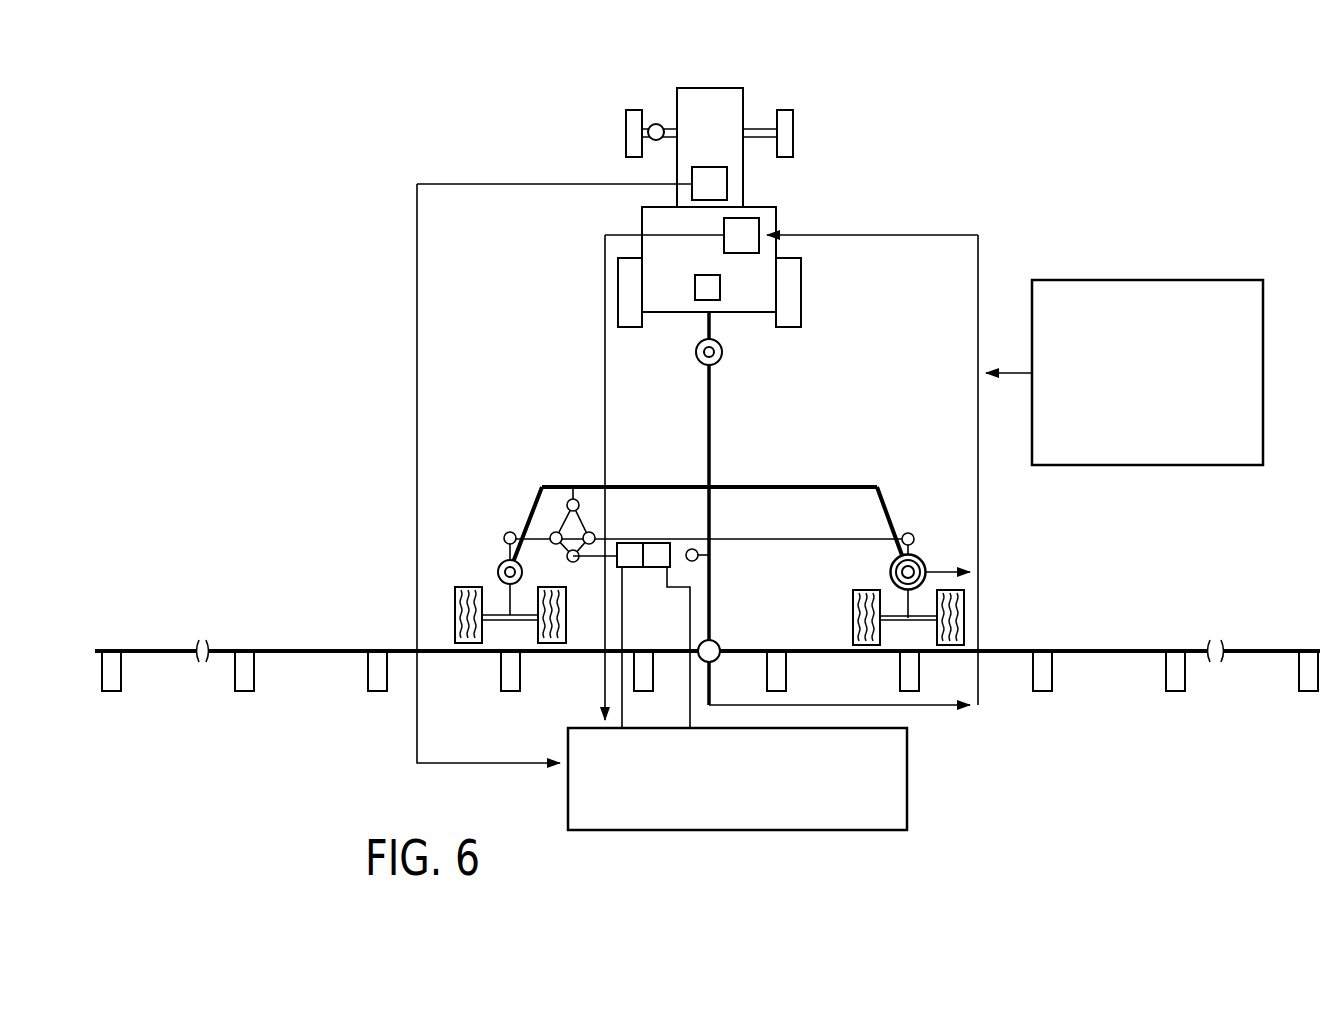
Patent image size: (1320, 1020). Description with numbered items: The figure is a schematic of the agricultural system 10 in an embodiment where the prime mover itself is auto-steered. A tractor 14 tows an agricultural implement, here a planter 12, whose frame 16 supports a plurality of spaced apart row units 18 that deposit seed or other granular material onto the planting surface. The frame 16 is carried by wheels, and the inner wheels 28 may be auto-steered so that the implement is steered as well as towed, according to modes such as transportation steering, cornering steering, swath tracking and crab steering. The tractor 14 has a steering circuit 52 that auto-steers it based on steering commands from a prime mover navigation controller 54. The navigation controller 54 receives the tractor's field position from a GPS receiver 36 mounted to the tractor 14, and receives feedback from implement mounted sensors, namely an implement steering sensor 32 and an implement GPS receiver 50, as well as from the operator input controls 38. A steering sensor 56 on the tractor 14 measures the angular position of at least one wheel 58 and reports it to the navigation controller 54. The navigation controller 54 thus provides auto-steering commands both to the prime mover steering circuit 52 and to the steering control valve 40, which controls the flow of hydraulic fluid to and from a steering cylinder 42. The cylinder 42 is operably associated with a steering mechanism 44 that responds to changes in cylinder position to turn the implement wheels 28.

The agricultural system 10 is at (1187, 130).
The planter 12 is at (1230, 540).
The tractor 14 is at (908, 98).
The frame 16 is at (1112, 655).
The row units 18 is at (128, 710).
The inner wheels 28 is at (548, 630).
The rotary steering sensor 32 is at (920, 560).
The tractor GPS receiver 36 is at (705, 287).
The operator input controls 38 is at (1148, 280).
The steering control valve 40 is at (907, 782).
The steering cylinder 42 is at (655, 552).
The steering mechanism 44 is at (552, 510).
The implement GPS receiver 50 is at (716, 646).
The steering circuit 52 is at (710, 186).
The prime mover navigation controller 54 is at (745, 228).
The steering sensor 56 is at (655, 122).
The wheel 58 is at (632, 122).